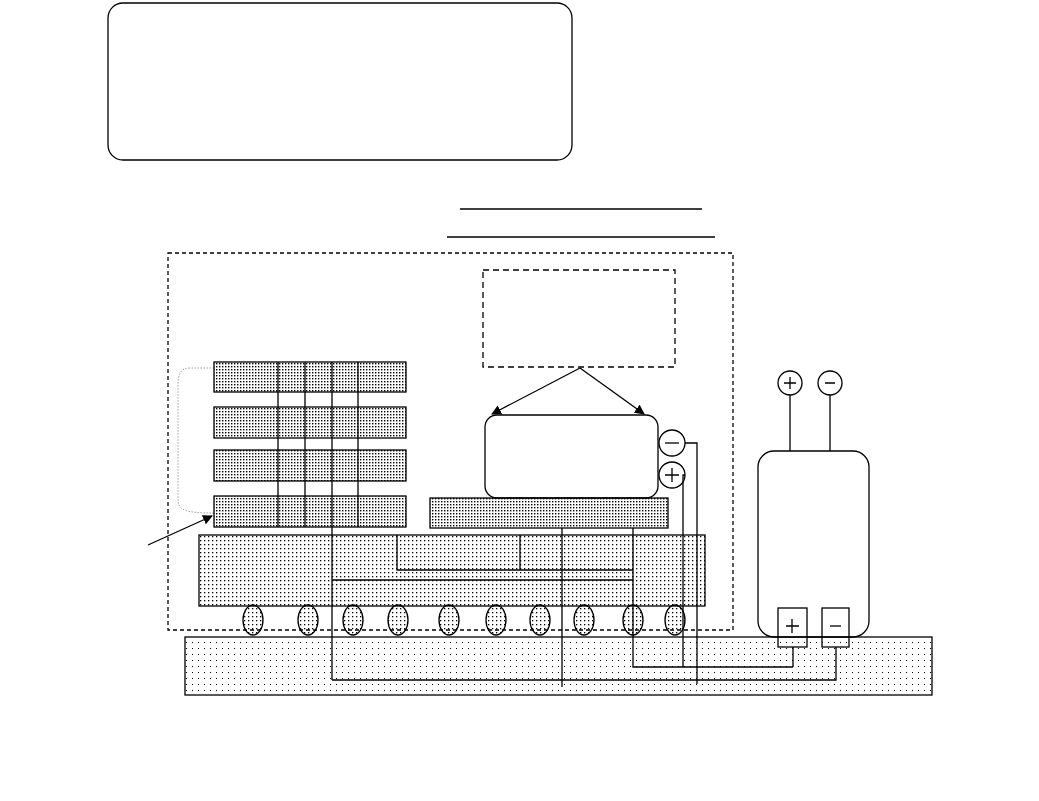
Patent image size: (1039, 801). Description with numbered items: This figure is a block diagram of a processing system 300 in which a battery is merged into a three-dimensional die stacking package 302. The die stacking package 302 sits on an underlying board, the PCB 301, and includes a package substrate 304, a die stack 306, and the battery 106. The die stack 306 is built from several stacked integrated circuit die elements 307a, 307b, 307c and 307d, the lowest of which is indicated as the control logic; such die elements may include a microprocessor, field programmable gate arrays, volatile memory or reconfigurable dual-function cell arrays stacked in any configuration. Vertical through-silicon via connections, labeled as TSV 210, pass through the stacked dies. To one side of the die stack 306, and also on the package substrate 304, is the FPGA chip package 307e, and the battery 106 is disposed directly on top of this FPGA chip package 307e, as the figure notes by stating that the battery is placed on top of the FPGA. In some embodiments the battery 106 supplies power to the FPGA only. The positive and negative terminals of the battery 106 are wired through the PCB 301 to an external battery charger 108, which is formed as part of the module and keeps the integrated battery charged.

The processing system 300 is at (710, 86).
The PCB 301 is at (185, 670).
The die stacking package 302 is at (281, 253).
The package substrate 304 is at (198, 590).
The die stack 306 is at (243, 433).
The die (central logic) 307a is at (214, 511).
The die 307b is at (214, 466).
The die 307c is at (406, 424).
The die 307d is at (256, 362).
The FPGA chip package 307e is at (432, 498).
The through silicon via (TSV) 210 is at (284, 400).
The battery 106 is at (657, 420).
The battery charger 108 is at (869, 472).